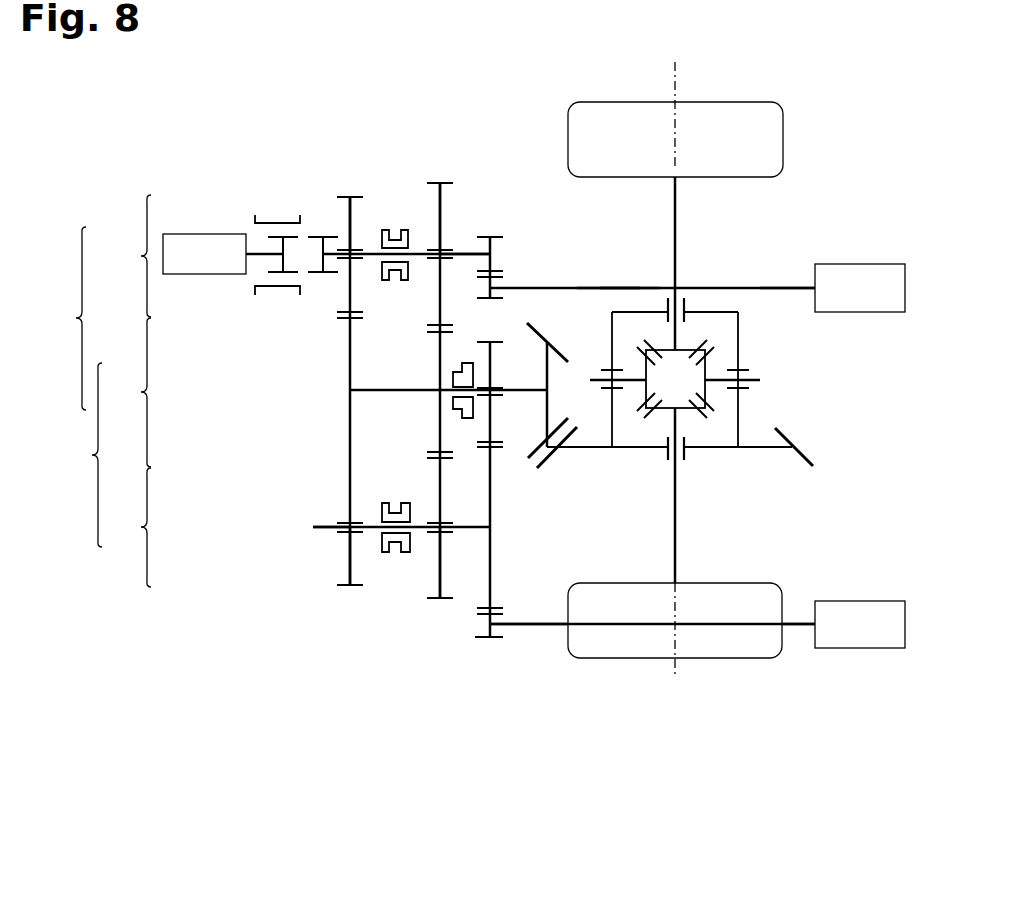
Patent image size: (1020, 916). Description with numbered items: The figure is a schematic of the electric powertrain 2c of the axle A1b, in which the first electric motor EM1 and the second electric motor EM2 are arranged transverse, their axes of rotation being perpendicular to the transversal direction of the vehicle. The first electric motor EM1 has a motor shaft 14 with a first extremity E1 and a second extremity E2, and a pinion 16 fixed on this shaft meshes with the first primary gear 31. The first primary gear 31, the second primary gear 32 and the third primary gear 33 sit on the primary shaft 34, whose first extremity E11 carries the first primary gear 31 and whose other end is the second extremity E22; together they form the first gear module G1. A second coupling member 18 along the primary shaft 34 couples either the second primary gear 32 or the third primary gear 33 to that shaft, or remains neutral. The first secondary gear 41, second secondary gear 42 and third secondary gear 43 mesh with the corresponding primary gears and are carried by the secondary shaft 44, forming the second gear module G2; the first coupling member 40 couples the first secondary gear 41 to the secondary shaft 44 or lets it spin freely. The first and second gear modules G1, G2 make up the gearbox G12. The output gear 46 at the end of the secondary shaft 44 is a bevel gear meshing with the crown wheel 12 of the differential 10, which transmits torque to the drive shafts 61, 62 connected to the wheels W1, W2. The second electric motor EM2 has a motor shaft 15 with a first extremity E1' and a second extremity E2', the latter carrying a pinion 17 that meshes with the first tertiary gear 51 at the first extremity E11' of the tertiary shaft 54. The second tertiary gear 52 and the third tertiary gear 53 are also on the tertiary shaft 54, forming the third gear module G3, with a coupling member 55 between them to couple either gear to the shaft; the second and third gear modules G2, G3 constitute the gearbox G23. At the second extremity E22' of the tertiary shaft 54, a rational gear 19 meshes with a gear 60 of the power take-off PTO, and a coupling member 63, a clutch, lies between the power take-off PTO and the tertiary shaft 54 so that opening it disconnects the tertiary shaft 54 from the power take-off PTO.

The differential 10 is at (788, 355).
The crown wheel 12 is at (768, 450).
The motor shaft 14 is at (530, 623).
The motor shaft 15 is at (608, 287).
The pinion 16 is at (478, 626).
The pinion 17 is at (500, 287).
The second coupling member 18 is at (392, 555).
The rational gear 19 is at (312, 274).
The first primary gear 31 is at (492, 566).
The second primary gear 32 is at (437, 560).
The third primary gear 33 is at (344, 575).
The primary shaft 34 is at (336, 524).
The first coupling member 40 is at (455, 420).
The first secondary gear 41 is at (492, 365).
The second secondary gear 42 is at (440, 373).
The third secondary gear 43 is at (350, 427).
The secondary shaft 44 is at (376, 393).
The output gear 46 is at (548, 372).
The first tertiary gear 51 is at (495, 260).
The second tertiary gear 52 is at (440, 207).
The third tertiary gear 53 is at (350, 222).
The tertiary shaft 54 is at (395, 280).
The coupling member 55 is at (393, 230).
The gear of the power take-off 60 is at (270, 241).
The drive shaft 61 is at (677, 503).
The drive shaft 62 is at (677, 222).
The coupling member 63 is at (270, 288).
The electric powertrain 2c is at (858, 420).
The first extremity E1 is at (801, 587).
The second extremity E2 is at (529, 656).
The first extremity E11 is at (454, 506).
The second extremity E22 is at (307, 551).
The first extremity E1' is at (787, 254).
The second extremity E2' is at (607, 249).
The first extremity E11' is at (498, 217).
The second extremity E22' is at (390, 203).
The wheel W1 is at (735, 658).
The wheel W2 is at (784, 128).
The axle A1b is at (699, 369).
The first gear module G1 is at (127, 527).
The second gear module G2 is at (127, 392).
The third gear module G3 is at (127, 256).
The gearbox G12 is at (73, 455).
The gearbox G23 is at (58, 318).
The power take-off PTO is at (223, 254).
The first electric motor EM1 is at (860, 624).
The second electric motor EM2 is at (860, 288).